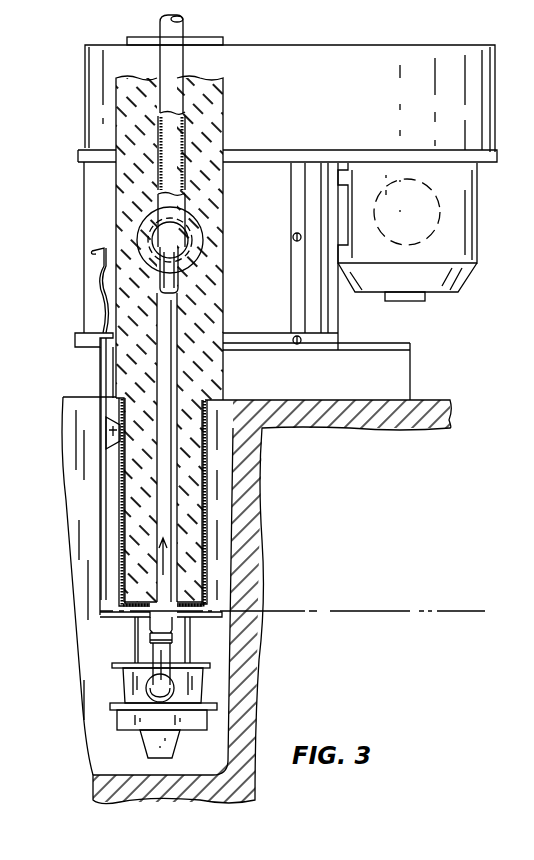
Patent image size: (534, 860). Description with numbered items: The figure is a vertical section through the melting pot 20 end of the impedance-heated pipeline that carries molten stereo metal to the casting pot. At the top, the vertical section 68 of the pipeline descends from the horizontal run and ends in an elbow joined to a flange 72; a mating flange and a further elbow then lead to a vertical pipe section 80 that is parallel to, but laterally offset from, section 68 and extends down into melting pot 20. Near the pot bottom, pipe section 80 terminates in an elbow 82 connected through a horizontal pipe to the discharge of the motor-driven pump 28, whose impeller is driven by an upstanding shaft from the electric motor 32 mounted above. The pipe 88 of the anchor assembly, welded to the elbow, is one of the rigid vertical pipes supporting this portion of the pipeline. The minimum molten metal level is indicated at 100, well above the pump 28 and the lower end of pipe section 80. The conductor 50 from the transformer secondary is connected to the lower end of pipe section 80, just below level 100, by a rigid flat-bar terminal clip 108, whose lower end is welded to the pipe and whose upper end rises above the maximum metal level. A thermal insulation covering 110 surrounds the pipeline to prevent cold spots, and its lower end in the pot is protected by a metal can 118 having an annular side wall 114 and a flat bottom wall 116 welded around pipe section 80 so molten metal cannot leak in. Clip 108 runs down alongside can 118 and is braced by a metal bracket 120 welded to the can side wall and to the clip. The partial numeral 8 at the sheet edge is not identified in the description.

The melting pot 20 is at (260, 592).
The motor-driven pump 28 is at (207, 720).
The electric motor 32 is at (465, 196).
The conductor 50 is at (92, 270).
The vertical section 68 is at (186, 60).
The flange 72 is at (193, 235).
The vertical pipe section 80 is at (181, 314).
The elbow 82 is at (150, 683).
The upper pipe 88 is at (180, 283).
The minimum level of molten metal 100 is at (321, 611).
The terminal clip 108 is at (101, 472).
The thermal insulation covering 110 is at (208, 378).
The annular side wall 114 is at (119, 530).
The bottom wall 116 is at (238, 611).
The metal can 118 is at (117, 564).
The metal bracket 120 is at (106, 431).
The partial numeral 8 is at (2, 137).